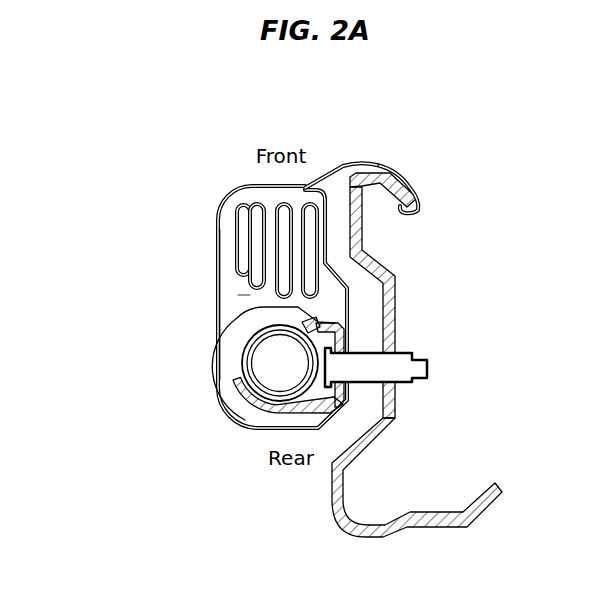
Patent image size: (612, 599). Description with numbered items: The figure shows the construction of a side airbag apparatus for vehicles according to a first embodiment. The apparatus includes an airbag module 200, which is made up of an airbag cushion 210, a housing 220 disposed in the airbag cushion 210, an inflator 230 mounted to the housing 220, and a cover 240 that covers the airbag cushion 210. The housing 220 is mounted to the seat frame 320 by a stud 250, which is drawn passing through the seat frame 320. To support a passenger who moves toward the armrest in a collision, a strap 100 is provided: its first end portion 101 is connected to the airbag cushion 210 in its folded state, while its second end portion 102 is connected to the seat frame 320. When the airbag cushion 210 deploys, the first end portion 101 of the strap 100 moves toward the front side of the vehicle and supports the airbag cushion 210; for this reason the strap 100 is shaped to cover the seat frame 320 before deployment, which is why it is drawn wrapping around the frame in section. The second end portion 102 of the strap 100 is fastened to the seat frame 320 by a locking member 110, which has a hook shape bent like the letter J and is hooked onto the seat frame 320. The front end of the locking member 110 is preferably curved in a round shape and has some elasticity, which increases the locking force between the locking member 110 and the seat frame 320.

The strap 100 is at (327, 175).
The first end portion 101 is at (243, 296).
The second end portion 102 is at (412, 175).
The locking member 110 is at (421, 200).
The airbag module 200 is at (199, 210).
The airbag cushion 210 is at (258, 192).
The housing 220 is at (233, 405).
The inflator 230 is at (244, 355).
The cover 240 is at (218, 268).
The stud 250 is at (417, 363).
The seat frame 320 is at (330, 500).